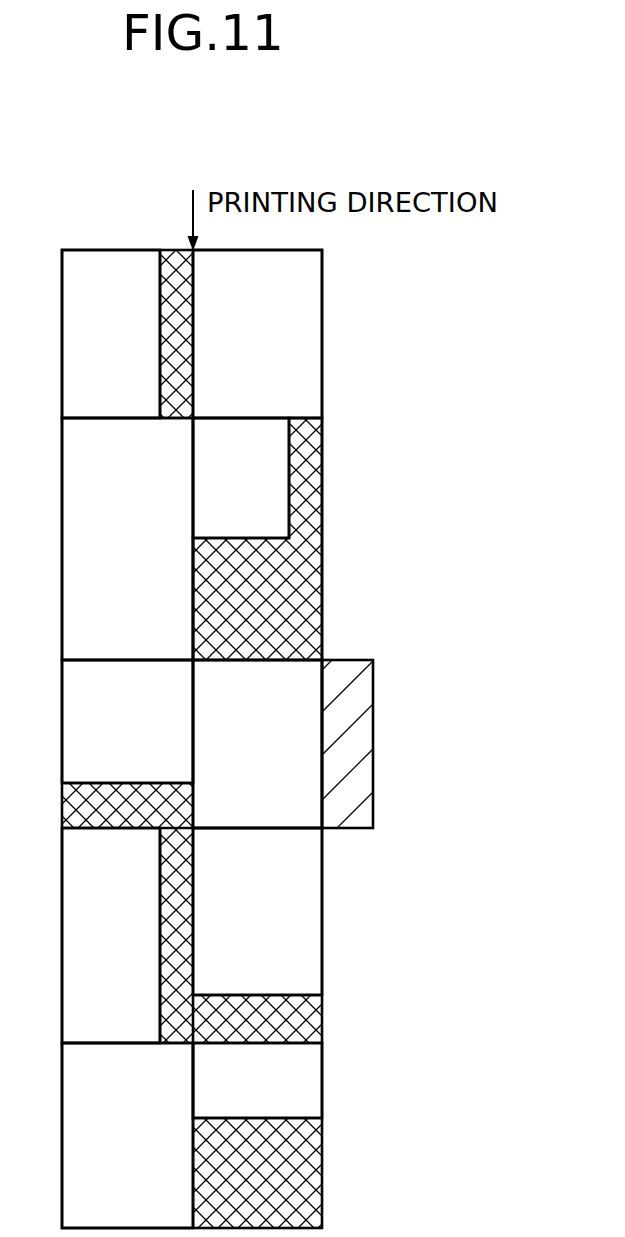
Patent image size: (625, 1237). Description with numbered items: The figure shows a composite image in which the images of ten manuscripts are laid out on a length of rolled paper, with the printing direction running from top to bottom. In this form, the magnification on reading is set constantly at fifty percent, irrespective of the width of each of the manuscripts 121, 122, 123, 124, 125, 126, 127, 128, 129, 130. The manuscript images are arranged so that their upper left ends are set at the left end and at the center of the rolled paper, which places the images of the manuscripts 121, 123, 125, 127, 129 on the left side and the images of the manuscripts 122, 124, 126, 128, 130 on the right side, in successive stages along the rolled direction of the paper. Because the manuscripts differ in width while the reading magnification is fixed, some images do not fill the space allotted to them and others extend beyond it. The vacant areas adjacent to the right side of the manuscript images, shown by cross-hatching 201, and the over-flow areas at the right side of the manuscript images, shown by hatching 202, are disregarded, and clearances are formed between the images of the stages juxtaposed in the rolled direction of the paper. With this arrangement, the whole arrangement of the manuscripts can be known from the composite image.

The manuscript 121 is at (111, 334).
The manuscript 122 is at (257, 334).
The manuscript 123 is at (127, 539).
The manuscript 124 is at (241, 478).
The manuscript 125 is at (127, 721).
The manuscript 126 is at (257, 744).
The manuscript 127 is at (111, 935).
The manuscript 128 is at (257, 911).
The manuscript 129 is at (127, 1135).
The manuscript 130 is at (257, 1080).
The cross-hatching 201 is at (303, 578).
The hatching 202 is at (357, 752).